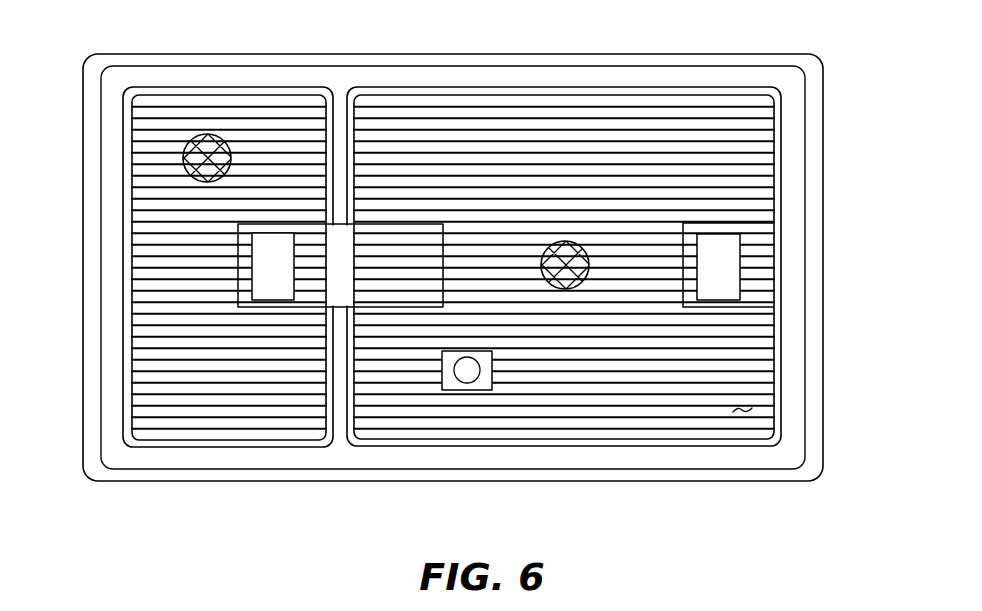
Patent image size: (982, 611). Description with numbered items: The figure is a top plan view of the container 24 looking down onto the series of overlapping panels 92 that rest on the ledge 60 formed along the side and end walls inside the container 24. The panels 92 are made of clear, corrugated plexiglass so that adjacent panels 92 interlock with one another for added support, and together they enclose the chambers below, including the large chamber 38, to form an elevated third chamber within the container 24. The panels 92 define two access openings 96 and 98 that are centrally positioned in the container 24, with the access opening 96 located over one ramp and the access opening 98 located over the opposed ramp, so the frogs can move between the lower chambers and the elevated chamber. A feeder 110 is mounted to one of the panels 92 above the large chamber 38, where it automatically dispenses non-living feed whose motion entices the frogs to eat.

The container 24 is at (530, 53).
The ledge 60 is at (630, 88).
The large chamber 38 is at (188, 341).
The access opening 96 is at (275, 263).
The access opening 98 is at (723, 262).
The feeder 110 is at (458, 390).
The overlapping panels 92 is at (733, 415).